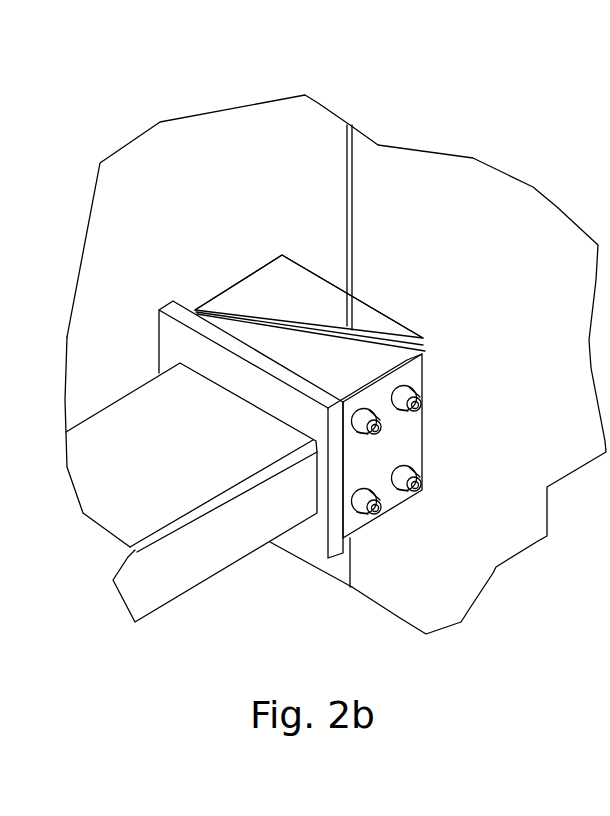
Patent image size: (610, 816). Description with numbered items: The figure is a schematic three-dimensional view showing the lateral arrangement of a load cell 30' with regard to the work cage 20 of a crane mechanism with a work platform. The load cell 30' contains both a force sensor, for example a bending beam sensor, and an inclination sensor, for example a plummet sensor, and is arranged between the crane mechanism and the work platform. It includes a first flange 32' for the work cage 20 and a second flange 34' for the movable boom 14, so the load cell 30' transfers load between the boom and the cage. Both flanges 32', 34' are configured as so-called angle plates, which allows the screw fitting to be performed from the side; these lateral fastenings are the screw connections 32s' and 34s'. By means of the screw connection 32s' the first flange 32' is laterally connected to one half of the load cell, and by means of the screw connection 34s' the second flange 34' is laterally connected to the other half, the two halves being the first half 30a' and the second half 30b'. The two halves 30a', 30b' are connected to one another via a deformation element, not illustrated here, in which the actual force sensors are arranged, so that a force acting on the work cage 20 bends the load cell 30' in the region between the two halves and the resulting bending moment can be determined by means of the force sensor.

The work cage 20 is at (315, 124).
The movable boom 14 is at (110, 445).
The load cell 30' is at (296, 290).
The first half of the load cell 30a' is at (310, 284).
The second half of the load cell 30b' is at (300, 333).
The screw connection 32s' is at (309, 255).
The first flange 32' is at (427, 439).
The second flange 34' is at (357, 498).
The screw connection 34s' is at (412, 537).